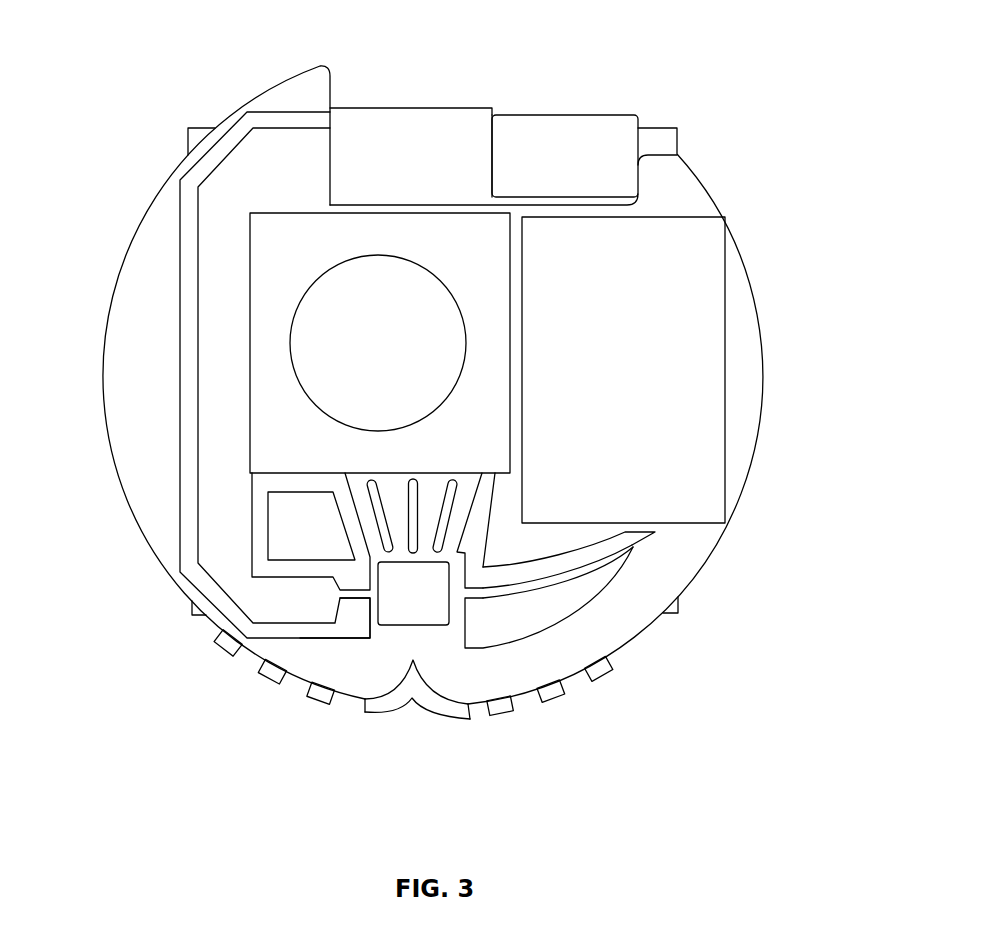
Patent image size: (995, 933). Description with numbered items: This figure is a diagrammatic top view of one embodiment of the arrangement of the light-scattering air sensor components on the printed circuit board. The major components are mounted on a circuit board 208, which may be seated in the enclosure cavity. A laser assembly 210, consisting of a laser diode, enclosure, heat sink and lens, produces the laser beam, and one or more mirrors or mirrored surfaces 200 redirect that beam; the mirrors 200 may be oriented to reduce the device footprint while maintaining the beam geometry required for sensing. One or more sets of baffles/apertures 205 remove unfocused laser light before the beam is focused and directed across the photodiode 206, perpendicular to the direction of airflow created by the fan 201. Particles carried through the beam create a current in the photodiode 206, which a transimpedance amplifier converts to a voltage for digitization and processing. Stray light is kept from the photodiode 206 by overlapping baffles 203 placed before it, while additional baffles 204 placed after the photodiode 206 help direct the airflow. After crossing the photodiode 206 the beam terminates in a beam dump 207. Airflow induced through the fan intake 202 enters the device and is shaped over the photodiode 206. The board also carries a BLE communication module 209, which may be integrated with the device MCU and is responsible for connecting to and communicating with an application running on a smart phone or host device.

The mirrors 200 is at (222, 145).
The fan 201 is at (283, 270).
The fan intake 202 is at (372, 350).
The overlapping baffles 203 is at (388, 514).
The baffles after the photodiode 204 is at (270, 678).
The baffles/apertures 205 is at (362, 598).
The photodiode 206 is at (435, 608).
The beam dump 207 is at (562, 612).
The circuit board 208 is at (703, 547).
The BLE communication module 209 is at (655, 322).
The laser assembly 210 is at (447, 155).